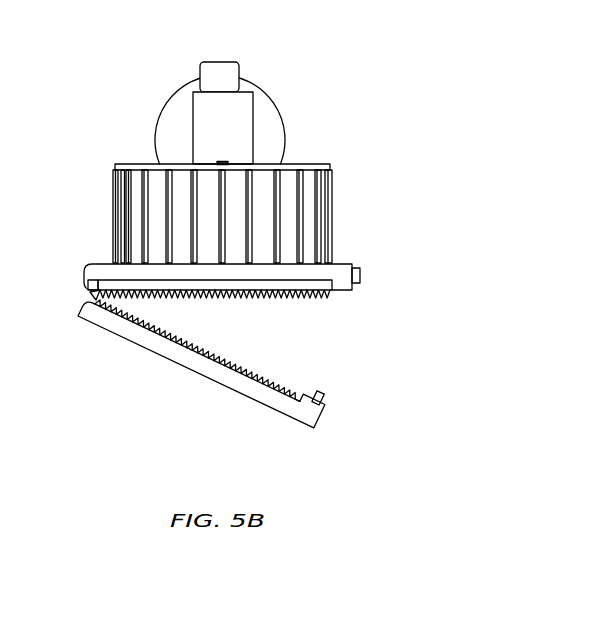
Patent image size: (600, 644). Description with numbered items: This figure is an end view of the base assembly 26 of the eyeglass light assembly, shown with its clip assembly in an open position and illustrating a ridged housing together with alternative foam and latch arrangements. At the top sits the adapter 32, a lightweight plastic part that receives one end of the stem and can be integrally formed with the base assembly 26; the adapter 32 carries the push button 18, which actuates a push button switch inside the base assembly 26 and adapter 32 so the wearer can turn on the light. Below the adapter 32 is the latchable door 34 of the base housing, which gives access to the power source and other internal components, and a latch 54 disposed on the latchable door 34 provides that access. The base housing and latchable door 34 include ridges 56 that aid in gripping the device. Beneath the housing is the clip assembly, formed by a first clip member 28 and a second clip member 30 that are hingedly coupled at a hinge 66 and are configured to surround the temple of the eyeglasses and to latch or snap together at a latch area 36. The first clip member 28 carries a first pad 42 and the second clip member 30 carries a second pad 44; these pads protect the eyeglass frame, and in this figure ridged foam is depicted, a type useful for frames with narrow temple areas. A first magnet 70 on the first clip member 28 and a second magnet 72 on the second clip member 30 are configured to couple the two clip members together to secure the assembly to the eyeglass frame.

The base assembly 26 is at (355, 88).
The push button 18 is at (217, 62).
The adapter 32 is at (167, 100).
The latch 54 is at (228, 163).
The latchable door 34 is at (133, 165).
The ridges 56 is at (115, 220).
The first clip member 28 is at (100, 264).
The second magnet 72 is at (355, 273).
The hinge 66 is at (90, 292).
The first pad 42 is at (244, 297).
The latch area 36 is at (349, 347).
The second clip member 30 is at (168, 362).
The second pad 44 is at (242, 370).
The first magnet 70 is at (337, 405).